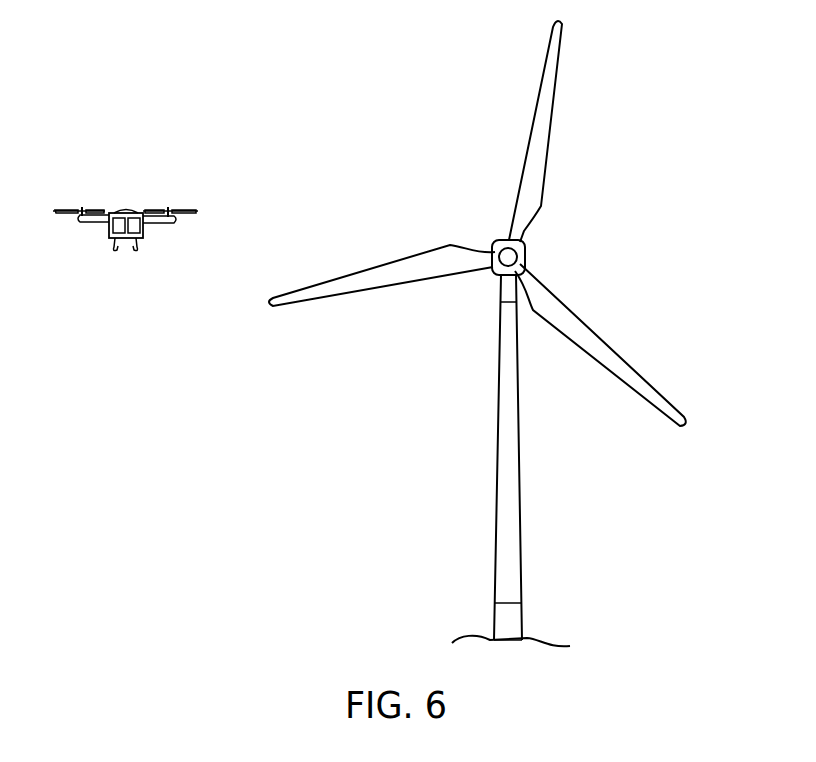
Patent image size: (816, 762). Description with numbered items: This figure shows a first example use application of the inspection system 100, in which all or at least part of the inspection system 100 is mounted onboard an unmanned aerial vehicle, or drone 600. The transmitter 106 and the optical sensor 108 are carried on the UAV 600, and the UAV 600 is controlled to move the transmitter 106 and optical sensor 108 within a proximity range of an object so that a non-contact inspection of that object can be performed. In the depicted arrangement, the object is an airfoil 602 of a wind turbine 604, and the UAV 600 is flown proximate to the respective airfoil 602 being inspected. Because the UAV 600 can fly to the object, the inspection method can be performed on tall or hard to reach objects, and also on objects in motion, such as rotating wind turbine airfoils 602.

The inspection system 100 is at (125, 251).
The transmitter 106 is at (107, 232).
The optical sensor 108 is at (143, 232).
The unmanned aerial vehicle 600 is at (95, 208).
The airfoil 602 is at (373, 278).
The wind turbine 604 is at (481, 214).